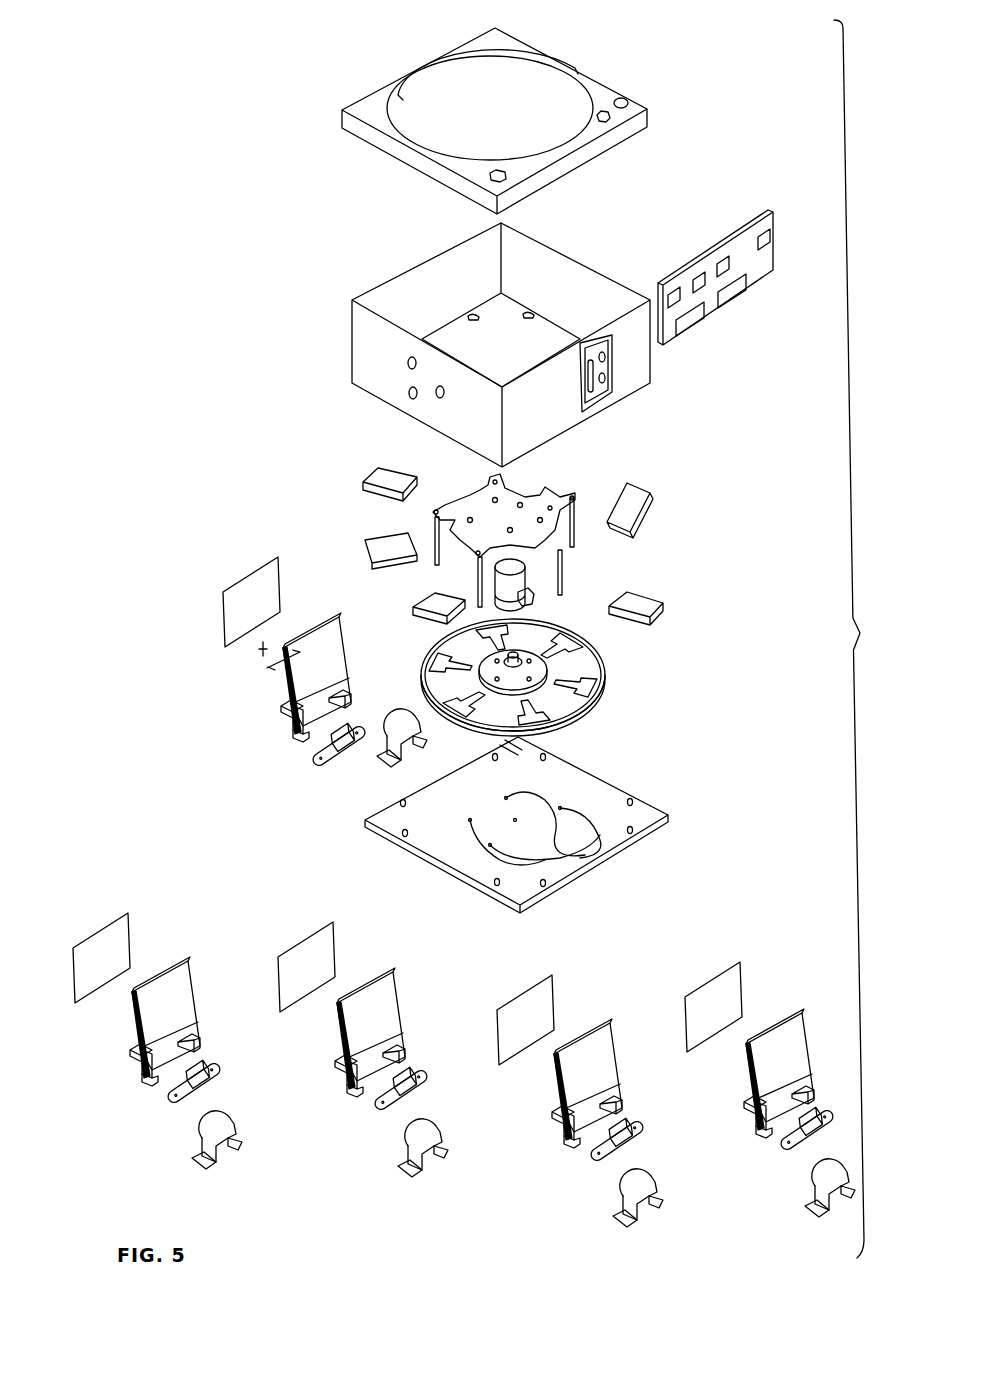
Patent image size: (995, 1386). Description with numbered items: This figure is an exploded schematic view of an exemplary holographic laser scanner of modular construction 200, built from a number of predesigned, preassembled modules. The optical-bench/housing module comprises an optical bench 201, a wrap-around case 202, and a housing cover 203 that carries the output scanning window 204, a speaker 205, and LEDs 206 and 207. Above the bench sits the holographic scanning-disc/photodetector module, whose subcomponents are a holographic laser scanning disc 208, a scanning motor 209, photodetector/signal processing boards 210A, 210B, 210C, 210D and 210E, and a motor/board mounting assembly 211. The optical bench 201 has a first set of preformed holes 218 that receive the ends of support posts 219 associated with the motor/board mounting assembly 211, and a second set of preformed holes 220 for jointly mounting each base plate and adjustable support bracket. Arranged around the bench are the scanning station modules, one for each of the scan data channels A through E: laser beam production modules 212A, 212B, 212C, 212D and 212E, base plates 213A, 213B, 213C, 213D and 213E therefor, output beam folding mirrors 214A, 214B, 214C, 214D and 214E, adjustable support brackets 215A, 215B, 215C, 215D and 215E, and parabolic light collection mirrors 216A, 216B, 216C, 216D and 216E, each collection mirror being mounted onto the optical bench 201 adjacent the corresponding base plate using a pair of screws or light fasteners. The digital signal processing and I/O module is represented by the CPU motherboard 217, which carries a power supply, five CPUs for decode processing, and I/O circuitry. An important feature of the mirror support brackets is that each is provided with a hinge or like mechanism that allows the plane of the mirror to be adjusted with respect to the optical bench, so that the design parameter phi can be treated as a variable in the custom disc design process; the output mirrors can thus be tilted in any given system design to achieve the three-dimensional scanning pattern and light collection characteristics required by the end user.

The holographic laser scanner of modular construction 200 is at (245, 415).
The optical bench 201 is at (513, 807).
The wrap-around case 202 is at (352, 320).
The housing cover 203 is at (362, 108).
The output scanning window 204 is at (536, 82).
The speaker 205 is at (508, 176).
The LED 206 is at (612, 118).
The LED 207 is at (628, 101).
The holographic laser scanning disc 208 is at (607, 668).
The scanning motor 209 is at (532, 590).
The photodetector/signal processing board 210A is at (652, 500).
The photodetector/signal processing board 210B is at (662, 608).
The photodetector/signal processing board 210C is at (450, 626).
The photodetector/signal processing board 210D is at (365, 542).
The photodetector/signal processing board 210E is at (365, 480).
The motor/board mounting assembly 211 is at (560, 488).
The laser beam production module 212A is at (350, 775).
The laser beam production module 212B is at (198, 1097).
The laser beam production module 212C is at (405, 1104).
The laser beam production module 212D is at (621, 1154).
The laser beam production module 212E is at (811, 1144).
The base plate 213A is at (316, 760).
The base plate 213B is at (170, 1098).
The base plate 213C is at (378, 1108).
The base plate 213D is at (595, 1158).
The base plate 213E is at (785, 1148).
The output beam folding mirror 214A is at (228, 610).
The output beam folding mirror 214B is at (92, 947).
The output beam folding mirror 214C is at (296, 955).
The output beam folding mirror 214D is at (515, 1010).
The output beam folding mirror 214E is at (705, 1000).
The adjustable support bracket 215A is at (285, 690).
The adjustable support bracket 215B is at (134, 1026).
The adjustable support bracket 215C is at (339, 1036).
The adjustable support bracket 215D is at (556, 1088).
The adjustable support bracket 215E is at (747, 1077).
The parabolic light collection mirror 216A is at (400, 762).
The parabolic light collection mirror 216B is at (220, 1158).
The parabolic light collection mirror 216C is at (426, 1166).
The parabolic light collection mirror 216D is at (643, 1218).
The parabolic light collection mirror 216E is at (835, 1210).
The CPU motherboard 217 is at (672, 266).
The first set of preformed holes 218 is at (575, 848).
The support posts 219 is at (578, 512).
The second set of preformed holes 220 is at (548, 757).